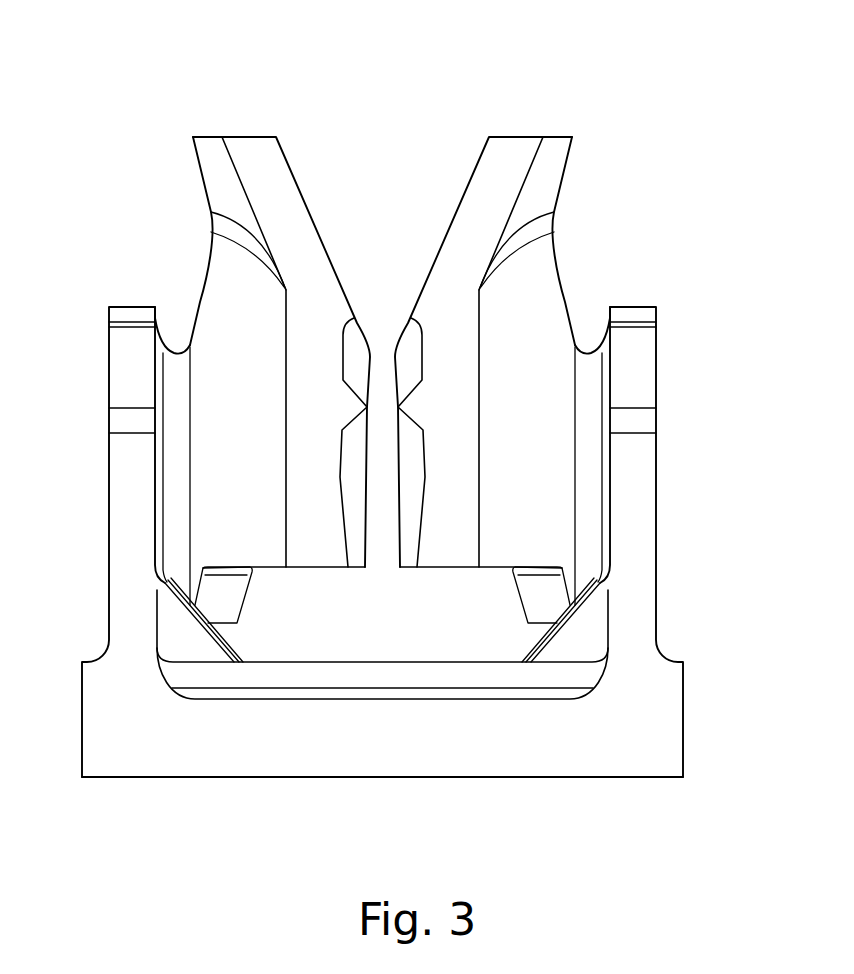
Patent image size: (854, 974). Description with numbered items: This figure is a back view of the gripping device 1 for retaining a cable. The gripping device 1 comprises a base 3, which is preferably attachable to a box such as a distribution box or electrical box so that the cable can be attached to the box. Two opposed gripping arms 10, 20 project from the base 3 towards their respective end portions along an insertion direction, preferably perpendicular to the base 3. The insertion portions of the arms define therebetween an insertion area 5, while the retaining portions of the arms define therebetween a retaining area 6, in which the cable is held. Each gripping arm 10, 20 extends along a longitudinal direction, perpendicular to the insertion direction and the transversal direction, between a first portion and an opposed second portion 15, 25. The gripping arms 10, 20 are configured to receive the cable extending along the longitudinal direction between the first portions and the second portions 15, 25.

The gripping device 1 is at (186, 113).
The base 3 is at (550, 735).
The insertion area 5 is at (463, 138).
The retaining area 6 is at (343, 500).
The gripping arm 10 is at (566, 230).
The second portion 15 is at (453, 388).
The gripping arm 20 is at (203, 230).
The second portion 25 is at (318, 388).